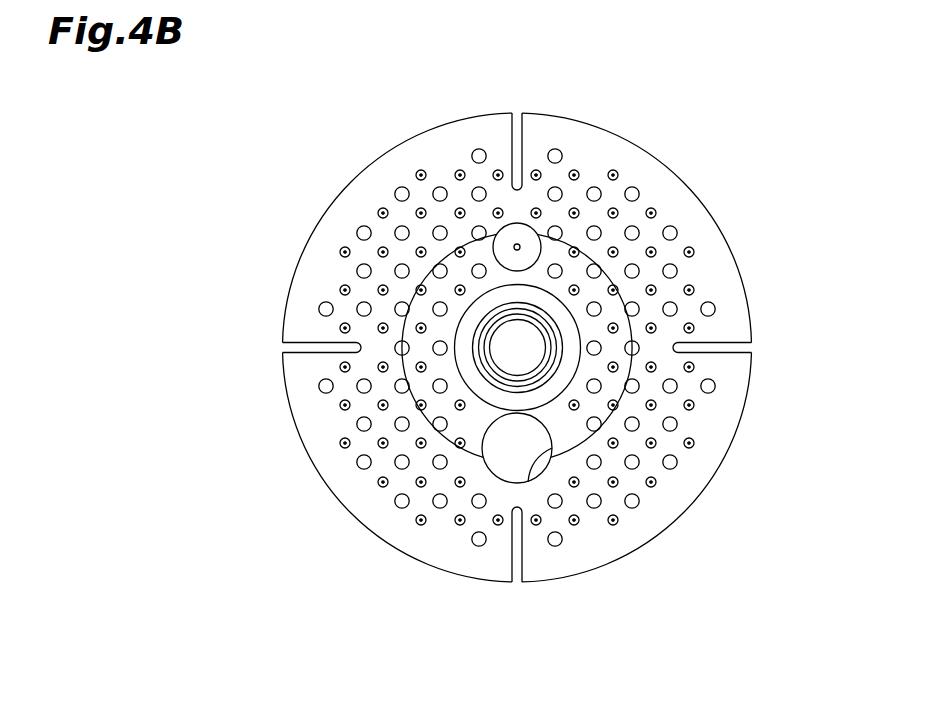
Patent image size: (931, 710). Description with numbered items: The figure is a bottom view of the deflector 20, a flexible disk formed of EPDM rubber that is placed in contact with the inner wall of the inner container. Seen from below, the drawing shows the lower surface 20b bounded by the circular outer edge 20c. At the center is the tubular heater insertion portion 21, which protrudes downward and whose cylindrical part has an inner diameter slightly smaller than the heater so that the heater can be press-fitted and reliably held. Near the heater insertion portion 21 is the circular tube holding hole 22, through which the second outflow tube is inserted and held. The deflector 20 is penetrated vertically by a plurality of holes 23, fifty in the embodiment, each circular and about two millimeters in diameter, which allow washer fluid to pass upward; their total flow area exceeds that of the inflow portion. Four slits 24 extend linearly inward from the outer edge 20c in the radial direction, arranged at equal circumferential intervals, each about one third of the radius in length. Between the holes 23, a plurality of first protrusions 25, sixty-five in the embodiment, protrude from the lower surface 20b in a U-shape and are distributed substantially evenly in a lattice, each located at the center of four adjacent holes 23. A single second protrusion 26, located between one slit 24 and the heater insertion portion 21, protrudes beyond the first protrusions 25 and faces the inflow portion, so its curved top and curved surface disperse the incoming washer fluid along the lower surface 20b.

The deflector 20 is at (728, 117).
The lower surface 20b is at (640, 168).
The outer edge 20c is at (707, 216).
The heater insertion portion 21 is at (560, 334).
The tube holding hole 22 is at (528, 482).
The holes 23 is at (550, 160).
The slits 24 is at (522, 137).
The first protrusions 25 is at (575, 173).
The second protrusion 26 is at (516, 244).